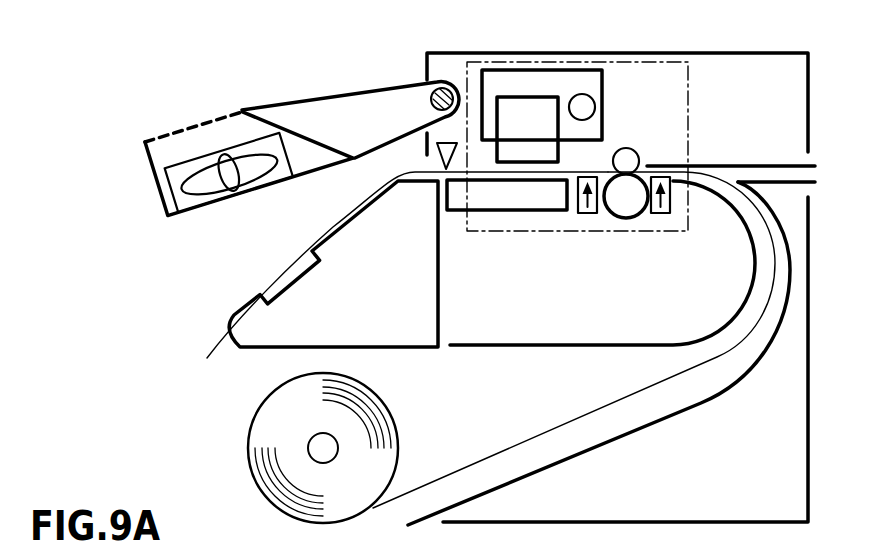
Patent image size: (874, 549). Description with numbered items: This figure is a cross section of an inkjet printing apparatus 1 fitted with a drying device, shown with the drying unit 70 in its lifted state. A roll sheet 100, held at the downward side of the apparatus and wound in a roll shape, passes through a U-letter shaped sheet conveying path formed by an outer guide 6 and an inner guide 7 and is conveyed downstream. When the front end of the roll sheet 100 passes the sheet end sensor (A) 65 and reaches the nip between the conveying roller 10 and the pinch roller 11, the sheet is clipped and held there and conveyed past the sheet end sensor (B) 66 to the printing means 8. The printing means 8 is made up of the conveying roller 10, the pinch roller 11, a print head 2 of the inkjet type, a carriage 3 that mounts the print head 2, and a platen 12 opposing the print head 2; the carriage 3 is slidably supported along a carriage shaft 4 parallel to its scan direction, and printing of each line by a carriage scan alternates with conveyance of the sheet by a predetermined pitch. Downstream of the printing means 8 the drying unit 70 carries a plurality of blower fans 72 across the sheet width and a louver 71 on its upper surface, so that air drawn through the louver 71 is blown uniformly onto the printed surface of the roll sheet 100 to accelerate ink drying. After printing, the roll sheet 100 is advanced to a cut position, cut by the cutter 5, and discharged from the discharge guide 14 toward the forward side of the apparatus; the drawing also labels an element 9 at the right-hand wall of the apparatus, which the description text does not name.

The inkjet printing apparatus 1 is at (712, 520).
The print head 2 is at (527, 110).
The carriage 3 is at (512, 80).
The carriage shaft 4 is at (583, 100).
The cutter 5 is at (434, 160).
The outer guide 6 is at (778, 346).
The inner guide 7 is at (745, 312).
The printing means 8 is at (493, 233).
The discharge port 9 is at (738, 165).
The conveying roller 10 is at (622, 219).
The pinch roller 11 is at (630, 149).
The platen 12 is at (533, 211).
The discharge guide 14 is at (352, 221).
The sheet end sensor (A) 65 is at (660, 214).
The sheet end sensor (B) 66 is at (585, 214).
The drying unit 70 is at (157, 186).
The louver 71 is at (192, 122).
The blower fan 72 is at (206, 186).
The roll sheet 100 is at (268, 500).